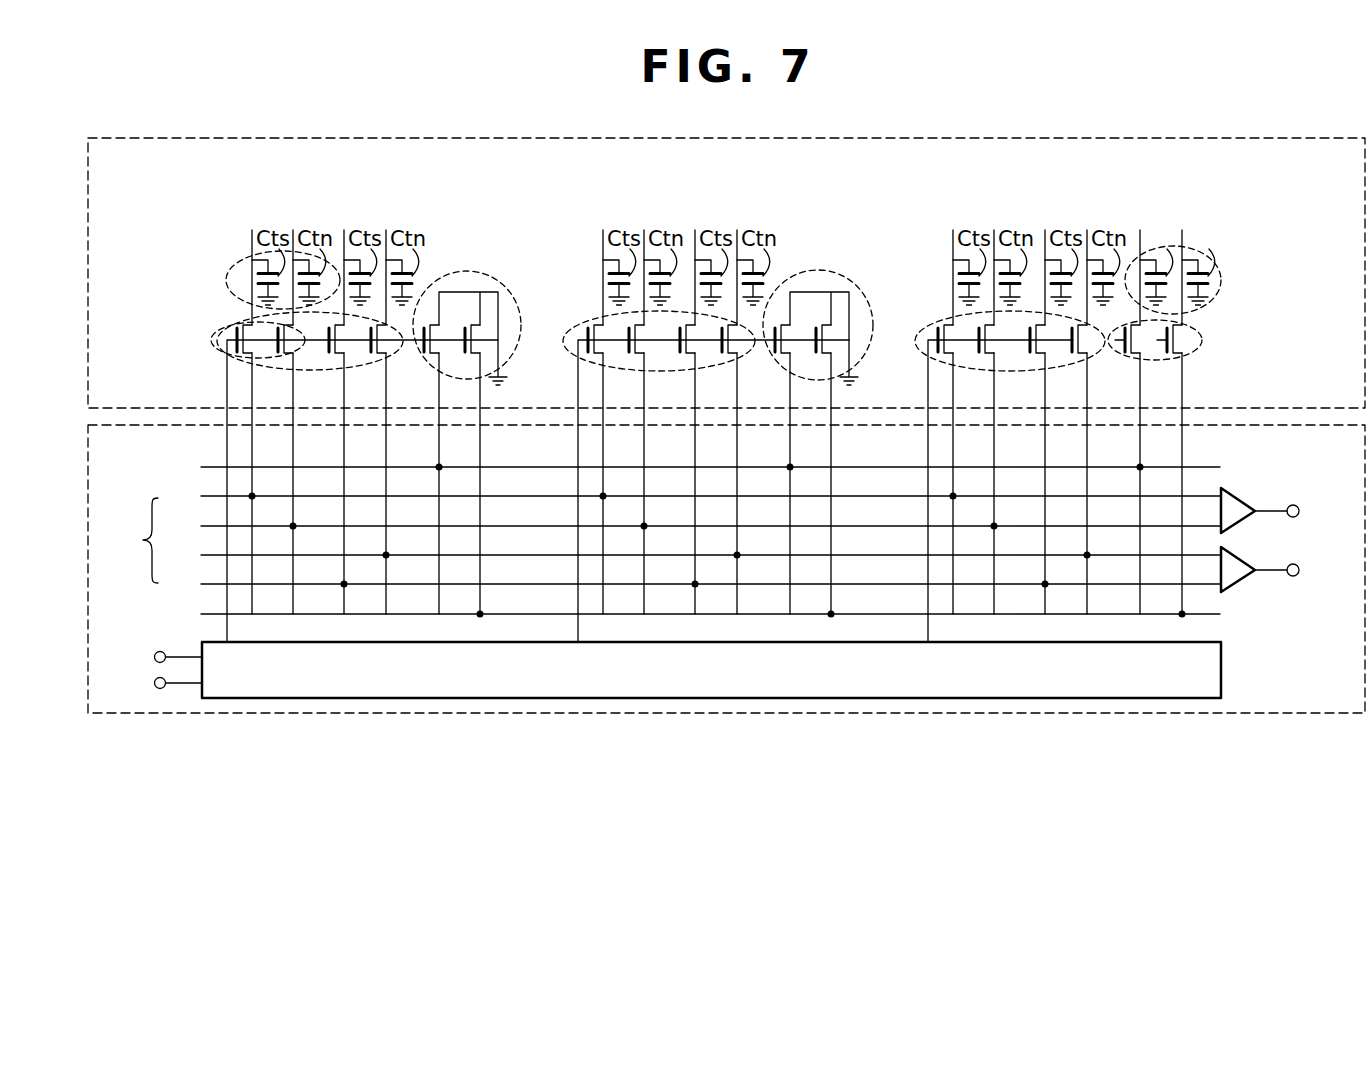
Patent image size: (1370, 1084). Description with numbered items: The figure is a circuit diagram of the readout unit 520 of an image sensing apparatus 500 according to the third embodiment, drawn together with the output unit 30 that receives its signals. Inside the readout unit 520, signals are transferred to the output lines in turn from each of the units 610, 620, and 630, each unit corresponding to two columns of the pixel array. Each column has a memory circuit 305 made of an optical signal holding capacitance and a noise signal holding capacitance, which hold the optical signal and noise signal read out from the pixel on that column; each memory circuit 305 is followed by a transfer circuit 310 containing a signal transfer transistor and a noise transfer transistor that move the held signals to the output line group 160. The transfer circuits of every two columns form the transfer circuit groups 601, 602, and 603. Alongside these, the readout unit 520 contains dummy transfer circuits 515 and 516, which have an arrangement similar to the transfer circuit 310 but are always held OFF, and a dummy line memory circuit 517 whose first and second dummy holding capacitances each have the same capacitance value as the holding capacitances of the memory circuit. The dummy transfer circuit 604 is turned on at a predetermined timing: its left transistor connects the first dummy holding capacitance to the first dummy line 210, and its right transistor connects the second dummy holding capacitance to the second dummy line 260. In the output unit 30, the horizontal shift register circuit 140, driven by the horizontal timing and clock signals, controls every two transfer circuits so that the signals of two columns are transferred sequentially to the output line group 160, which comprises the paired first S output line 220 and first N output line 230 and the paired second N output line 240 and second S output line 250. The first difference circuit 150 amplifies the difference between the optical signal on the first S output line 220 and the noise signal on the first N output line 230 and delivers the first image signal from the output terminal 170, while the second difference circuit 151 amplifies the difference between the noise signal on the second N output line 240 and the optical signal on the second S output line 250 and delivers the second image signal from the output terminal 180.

The readout unit 520 is at (1326, 137).
The unit 610 is at (347, 399).
The unit 620 is at (722, 399).
The unit 630 is at (1085, 399).
The memory circuit 305 is at (247, 263).
The transfer circuit 310 is at (242, 312).
The transfer circuit group 601 is at (218, 326).
The dummy transfer circuit 515 is at (489, 433).
The transfer circuit group 602 is at (642, 324).
The dummy transfer circuit 516 is at (839, 433).
The transfer circuit group 603 is at (919, 327).
The dummy line memory circuit 517 is at (1220, 283).
The dummy transfer circuit 604 is at (1189, 469).
The first dummy line 210 is at (219, 466).
The first S output line 220 is at (219, 495).
The first N output line 230 is at (219, 525).
The second N output line 240 is at (219, 554).
The second S output line 250 is at (219, 583).
The second dummy line 260 is at (219, 613).
The output line group 160 is at (124, 540).
The first difference circuit 150 is at (1242, 494).
The second difference circuit 151 is at (1242, 553).
The output terminal 170 is at (1299, 511).
The output terminal 180 is at (1299, 570).
The horizontal shift register circuit 140 is at (1221, 672).
The output unit 30 is at (1320, 714).
The image sensing apparatus 500 is at (197, 731).